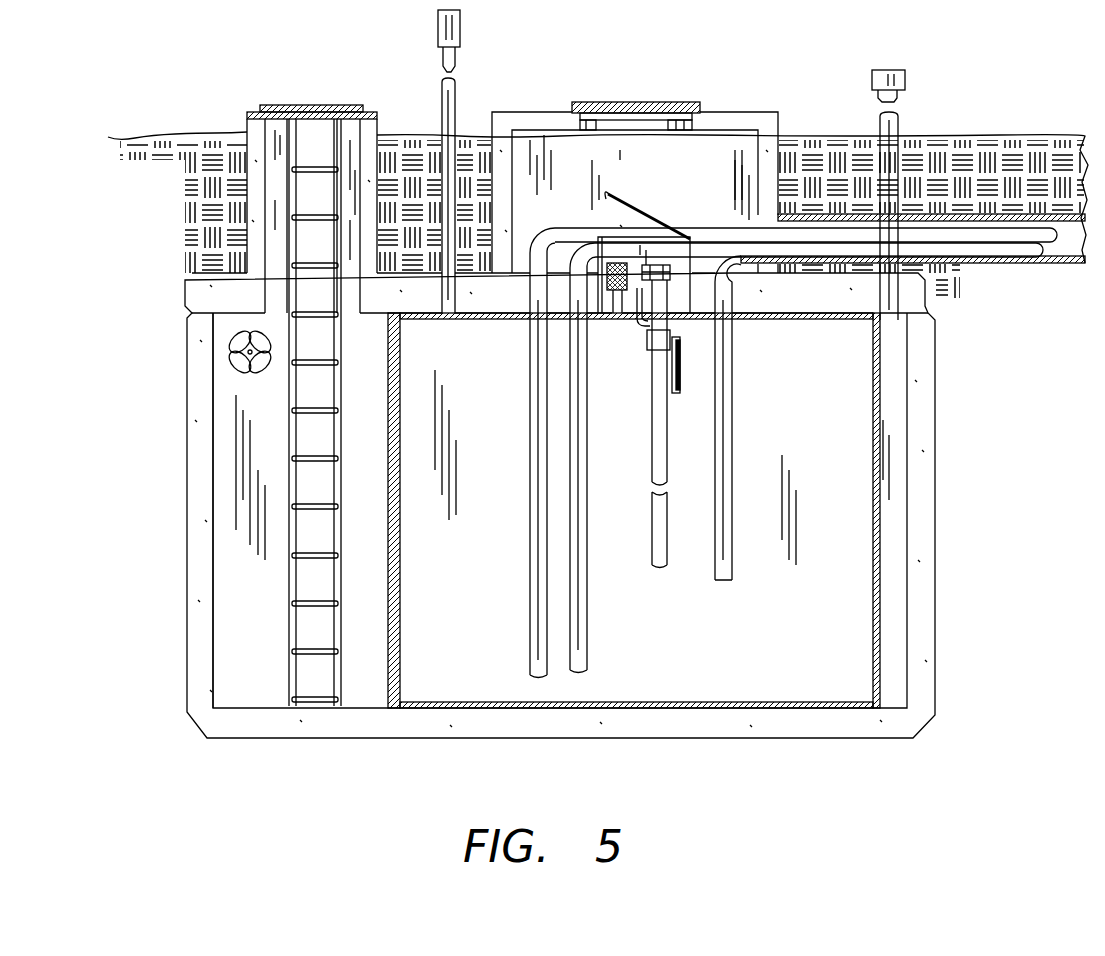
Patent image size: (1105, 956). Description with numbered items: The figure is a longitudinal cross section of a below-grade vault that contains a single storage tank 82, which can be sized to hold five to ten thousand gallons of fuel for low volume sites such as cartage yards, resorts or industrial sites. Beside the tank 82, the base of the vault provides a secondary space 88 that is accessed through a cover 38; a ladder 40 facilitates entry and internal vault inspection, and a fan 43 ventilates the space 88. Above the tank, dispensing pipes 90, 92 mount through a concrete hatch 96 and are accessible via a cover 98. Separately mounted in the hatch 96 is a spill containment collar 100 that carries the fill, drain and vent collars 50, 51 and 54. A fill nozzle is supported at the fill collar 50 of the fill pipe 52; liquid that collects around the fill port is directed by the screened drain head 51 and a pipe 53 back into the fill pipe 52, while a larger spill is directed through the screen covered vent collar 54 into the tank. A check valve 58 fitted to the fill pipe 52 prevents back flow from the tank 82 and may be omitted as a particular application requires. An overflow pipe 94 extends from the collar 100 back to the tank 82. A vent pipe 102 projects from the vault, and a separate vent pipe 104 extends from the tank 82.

The cover 38 is at (283, 106).
The ladder 40 is at (291, 443).
The fan 43 is at (247, 351).
The fill collar 50 is at (658, 264).
The screened drain head 51 is at (636, 289).
The fill pipe 52 is at (652, 442).
The drain pipe 53 is at (640, 326).
The vent collar 54 is at (618, 262).
The check valve 58 is at (678, 392).
The storage tank 82 is at (857, 633).
The secondary space 88 is at (235, 633).
The dispensing pipe 90 is at (733, 378).
The dispensing pipe 92 is at (530, 575).
The overflow pipe 94 is at (588, 623).
The concrete hatch 96 is at (725, 111).
The cover 98 is at (608, 102).
The spill containment collar 100 is at (692, 259).
The vent pipe 102 is at (899, 118).
The vent pipe 104 is at (462, 57).